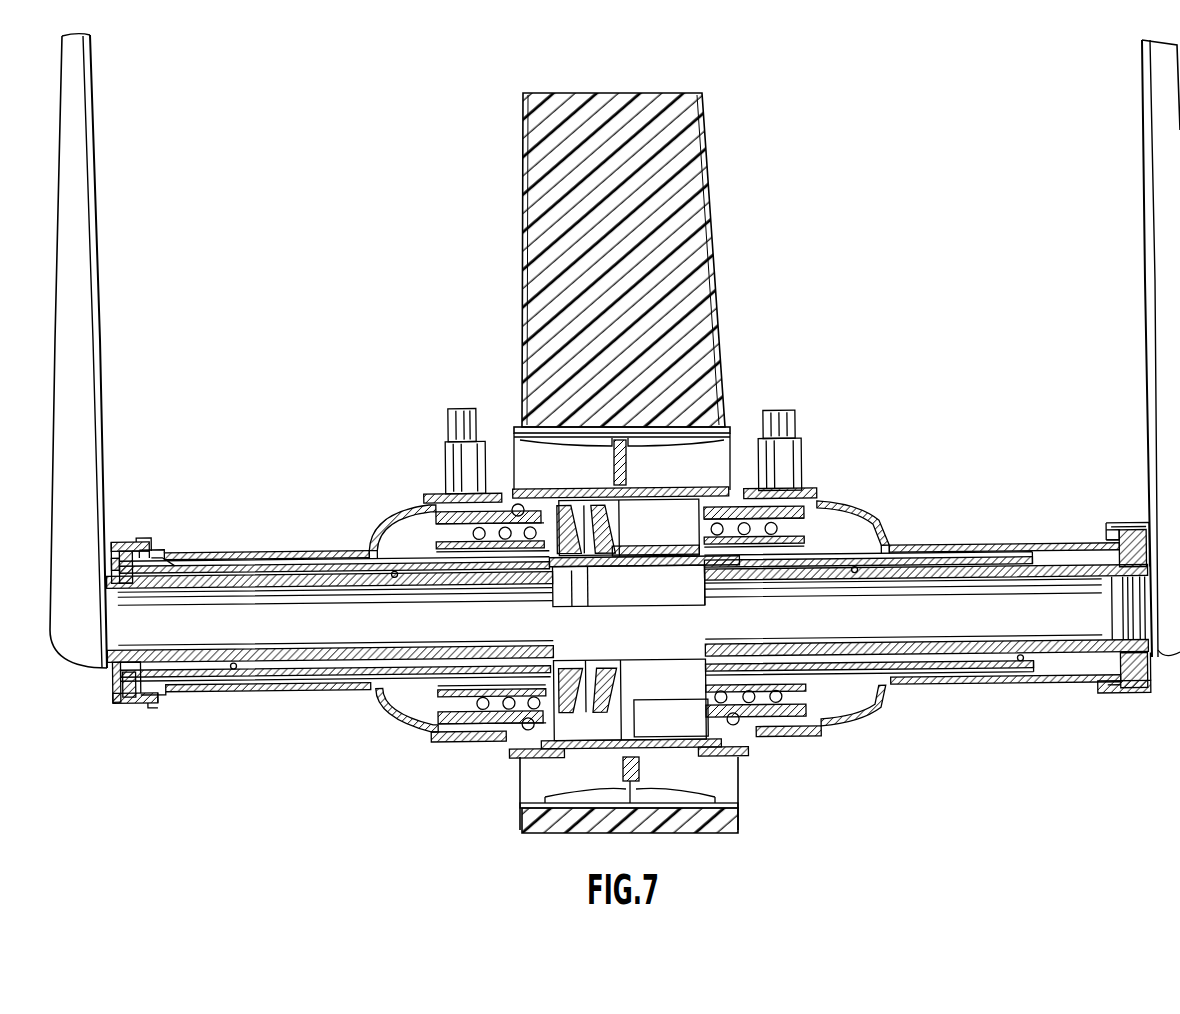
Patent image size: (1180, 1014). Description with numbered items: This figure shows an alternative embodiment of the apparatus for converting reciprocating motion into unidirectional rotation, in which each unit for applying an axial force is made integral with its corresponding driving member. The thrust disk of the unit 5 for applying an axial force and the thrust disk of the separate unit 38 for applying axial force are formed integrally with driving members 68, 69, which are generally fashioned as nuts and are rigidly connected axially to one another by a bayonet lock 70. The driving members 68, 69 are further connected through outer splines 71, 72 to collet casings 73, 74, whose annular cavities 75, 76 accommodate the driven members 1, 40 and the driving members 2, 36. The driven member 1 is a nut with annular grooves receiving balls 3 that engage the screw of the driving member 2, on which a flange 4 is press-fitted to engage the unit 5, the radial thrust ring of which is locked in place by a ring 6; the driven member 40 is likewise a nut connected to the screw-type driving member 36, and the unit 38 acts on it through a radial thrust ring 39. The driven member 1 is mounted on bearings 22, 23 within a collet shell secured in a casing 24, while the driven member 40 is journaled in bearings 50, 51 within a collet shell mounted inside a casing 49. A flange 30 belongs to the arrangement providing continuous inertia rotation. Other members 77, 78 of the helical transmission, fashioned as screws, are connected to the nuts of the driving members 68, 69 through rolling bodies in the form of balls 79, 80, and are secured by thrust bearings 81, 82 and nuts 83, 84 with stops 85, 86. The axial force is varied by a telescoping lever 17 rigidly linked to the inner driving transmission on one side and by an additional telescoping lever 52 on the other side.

The driven member 1 is at (667, 525).
The driving member 2 is at (688, 548).
The balls 3 is at (760, 655).
The flange 4 is at (622, 522).
The unit for applying an axial force 5 is at (612, 520).
The ring 6 is at (620, 668).
The telescoping lever 17 is at (1160, 240).
The bearing 22 is at (722, 495).
The bearing 23 is at (810, 512).
The casing 24 is at (790, 740).
The flange 30 is at (563, 745).
The driving member 36 is at (375, 547).
The unit for applying axial force 38 is at (566, 520).
The radial thrust ring 39 is at (538, 660).
The driven member 40 is at (598, 520).
The casing 49 is at (468, 742).
The bearing 50 is at (446, 491).
The bearing 51 is at (515, 490).
The telescoping lever 52 is at (80, 262).
The driving member 68 is at (686, 568).
The driving member 69 is at (572, 568).
The bayonet lock 70 is at (598, 568).
The outer splines 71 is at (958, 548).
The outer splines 72 is at (278, 548).
The collet casing 73 is at (878, 532).
The collet casing 74 is at (408, 532).
The annular cavity 75 is at (845, 528).
The annular cavity 76 is at (385, 525).
The screw member 77 is at (980, 575).
The screw member 78 is at (628, 613).
The balls 79 is at (398, 575).
The balls 80 is at (858, 578).
The thrust bearing 81 is at (1107, 637).
The thrust bearing 82 is at (112, 678).
The nut 83 is at (128, 538).
The nut 84 is at (1125, 530).
The stop 85 is at (150, 540).
The stop 86 is at (1108, 535).